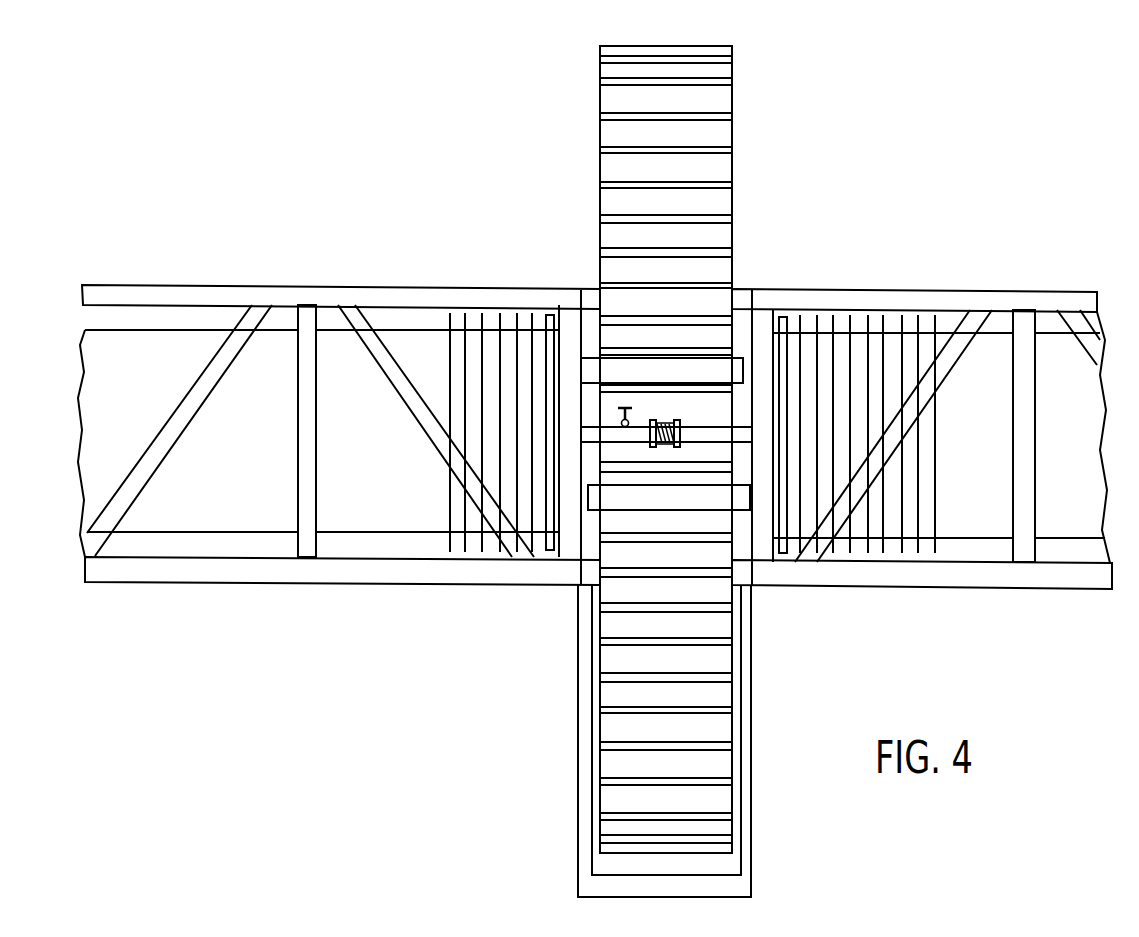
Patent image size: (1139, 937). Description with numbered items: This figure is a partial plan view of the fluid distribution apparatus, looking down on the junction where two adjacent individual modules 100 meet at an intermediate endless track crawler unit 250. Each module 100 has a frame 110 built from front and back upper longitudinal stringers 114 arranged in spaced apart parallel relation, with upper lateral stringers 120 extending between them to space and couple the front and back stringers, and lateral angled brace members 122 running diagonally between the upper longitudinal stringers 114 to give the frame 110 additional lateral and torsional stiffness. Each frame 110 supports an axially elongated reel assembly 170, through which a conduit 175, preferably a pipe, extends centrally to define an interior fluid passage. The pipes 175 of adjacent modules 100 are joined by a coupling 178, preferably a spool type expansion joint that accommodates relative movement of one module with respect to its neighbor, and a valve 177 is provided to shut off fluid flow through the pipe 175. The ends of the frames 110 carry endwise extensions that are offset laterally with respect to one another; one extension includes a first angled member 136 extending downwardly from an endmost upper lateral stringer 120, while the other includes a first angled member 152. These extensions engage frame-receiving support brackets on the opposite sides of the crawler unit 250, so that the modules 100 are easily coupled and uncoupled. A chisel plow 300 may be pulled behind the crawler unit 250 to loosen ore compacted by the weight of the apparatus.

The individual module 100 is at (399, 226).
The frame 110 is at (432, 284).
The upper longitudinal stringer 114 is at (188, 298).
The upper lateral stringer 120 is at (320, 453).
The lateral angled brace member 122 is at (162, 462).
The first angled member 136 is at (700, 497).
The first angled member 152 is at (640, 365).
The axially elongated reel assembly 170 is at (175, 542).
The conduit 175 is at (705, 430).
The valve 177 is at (622, 408).
The coupling 178 is at (668, 428).
The endless track crawler unit 250 is at (742, 89).
The chisel plow 300 is at (766, 863).